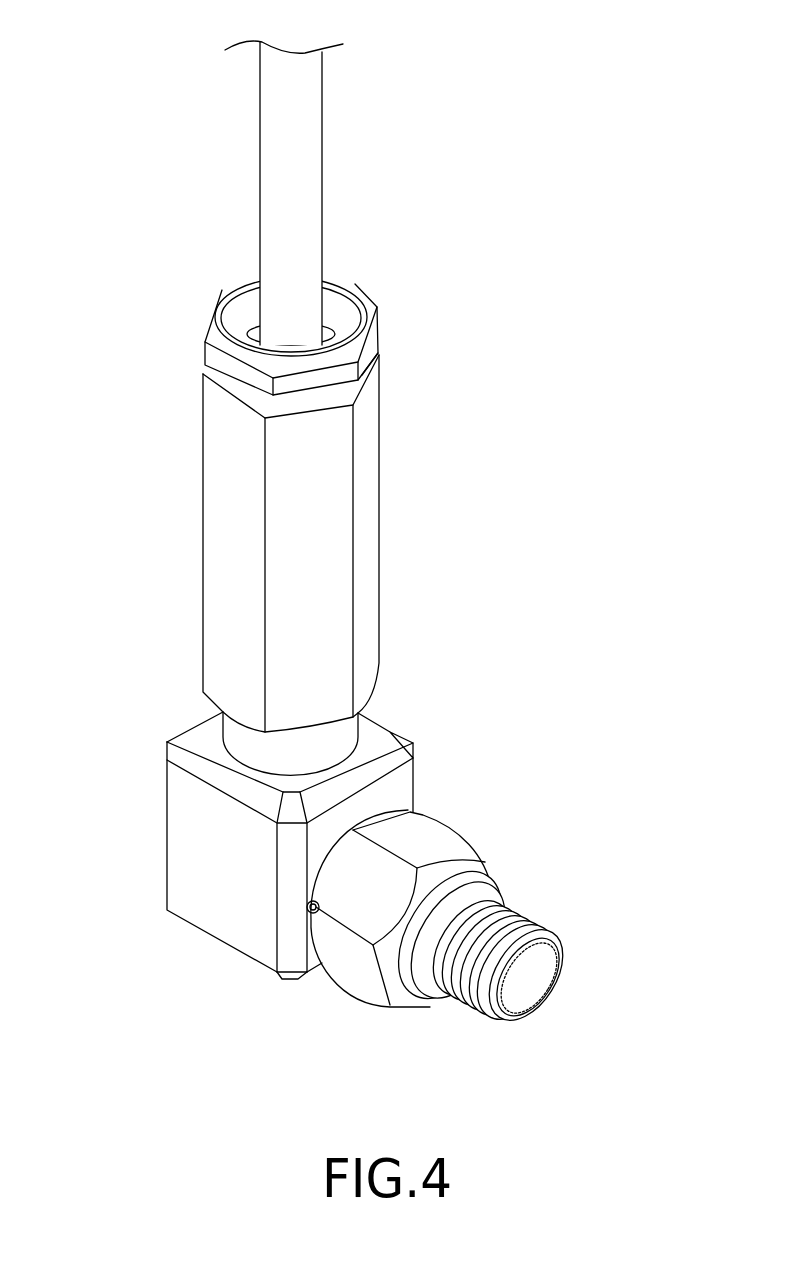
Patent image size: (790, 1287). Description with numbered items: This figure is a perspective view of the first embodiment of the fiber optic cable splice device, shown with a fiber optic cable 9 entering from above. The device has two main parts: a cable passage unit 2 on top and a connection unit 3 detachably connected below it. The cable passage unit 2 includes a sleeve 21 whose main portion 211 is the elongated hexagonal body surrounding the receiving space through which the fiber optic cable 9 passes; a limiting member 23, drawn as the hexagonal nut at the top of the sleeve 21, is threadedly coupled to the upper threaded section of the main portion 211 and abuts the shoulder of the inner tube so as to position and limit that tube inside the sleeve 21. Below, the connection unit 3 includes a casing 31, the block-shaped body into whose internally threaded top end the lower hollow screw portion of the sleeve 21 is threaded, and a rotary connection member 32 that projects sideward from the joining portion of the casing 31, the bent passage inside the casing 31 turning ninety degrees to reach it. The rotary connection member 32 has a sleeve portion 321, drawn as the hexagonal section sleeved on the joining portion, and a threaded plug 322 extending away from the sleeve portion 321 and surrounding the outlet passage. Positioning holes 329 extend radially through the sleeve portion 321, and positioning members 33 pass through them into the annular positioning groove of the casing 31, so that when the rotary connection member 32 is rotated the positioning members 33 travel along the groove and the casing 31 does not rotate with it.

The fiber optic cable 9 is at (315, 124).
The cable passage unit 2 is at (307, 408).
The sleeve 21 is at (218, 565).
The main portion 211 is at (210, 515).
The limiting member 23 is at (367, 307).
The connection unit 3 is at (372, 878).
The casing 31 is at (141, 822).
The rotary connection member 32 is at (534, 943).
The sleeve portion 321 is at (455, 840).
The threaded plug 322 is at (525, 912).
The positioning holes 329 is at (307, 908).
The positioning members 33 is at (319, 910).